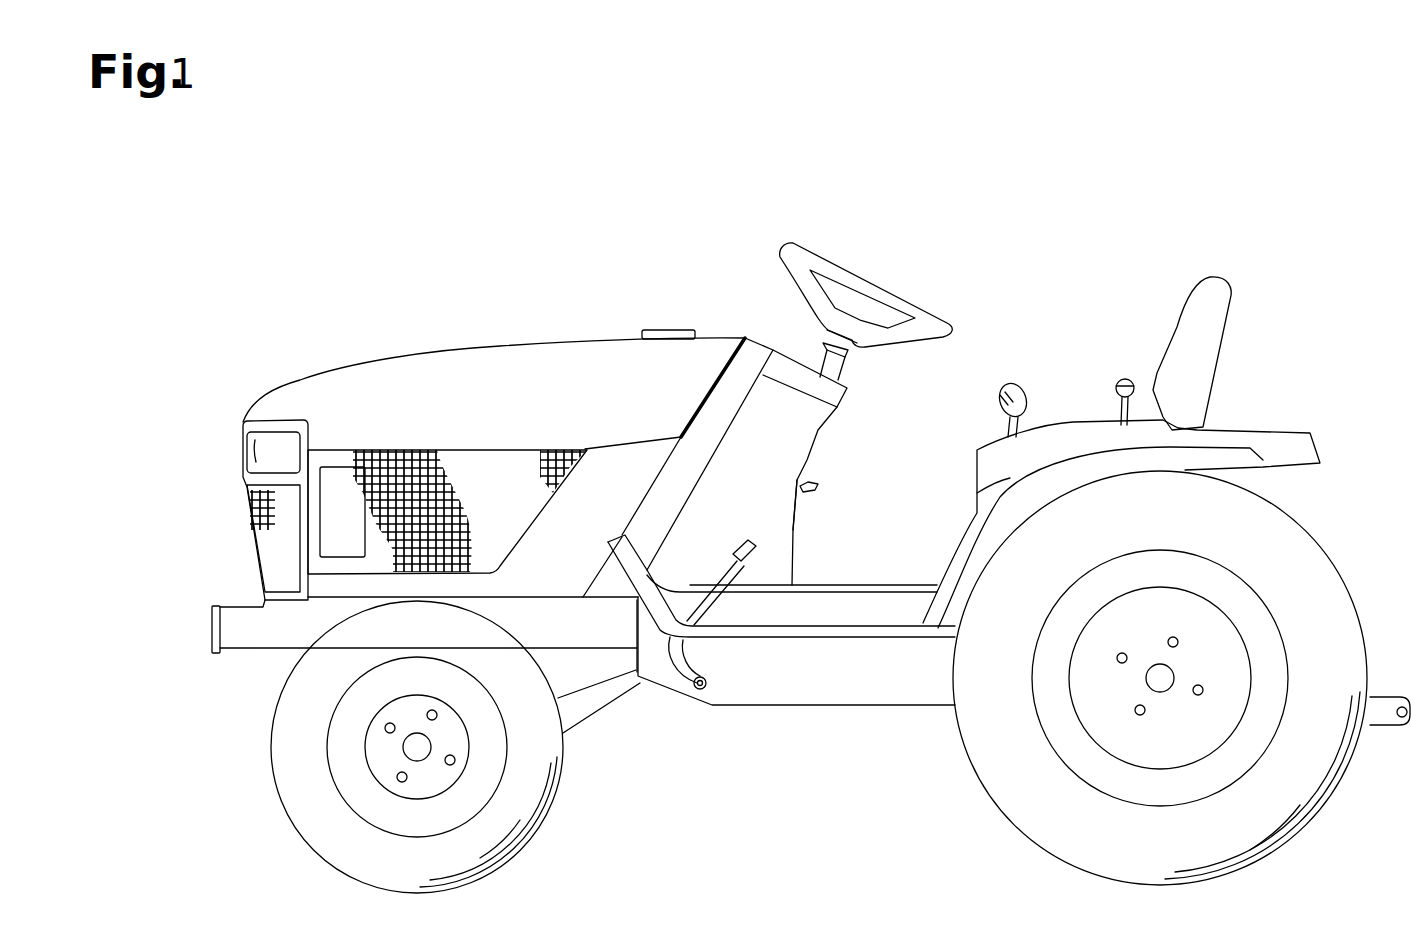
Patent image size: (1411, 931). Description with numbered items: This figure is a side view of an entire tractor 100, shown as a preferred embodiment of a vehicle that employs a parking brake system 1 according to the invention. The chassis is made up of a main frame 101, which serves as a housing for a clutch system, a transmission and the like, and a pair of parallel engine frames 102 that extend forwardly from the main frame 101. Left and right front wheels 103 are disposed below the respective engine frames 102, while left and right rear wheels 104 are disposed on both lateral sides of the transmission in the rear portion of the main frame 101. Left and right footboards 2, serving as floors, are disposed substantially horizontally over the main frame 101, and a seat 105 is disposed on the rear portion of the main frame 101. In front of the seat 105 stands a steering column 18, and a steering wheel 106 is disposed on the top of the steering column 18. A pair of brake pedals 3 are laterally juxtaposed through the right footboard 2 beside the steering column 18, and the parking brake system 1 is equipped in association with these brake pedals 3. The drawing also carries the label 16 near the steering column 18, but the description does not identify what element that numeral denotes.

The tractor 100 is at (726, 206).
The main frame 101 is at (817, 707).
The engine frames 102 is at (272, 645).
The front wheels 103 is at (562, 780).
The rear wheels 104 is at (990, 800).
The seat 105 is at (1177, 328).
The steering wheel 106 is at (896, 286).
The parking brake system 1 is at (833, 503).
The footboards 2 is at (720, 640).
The brake pedals 3 is at (760, 517).
The cowl 16 is at (820, 478).
The steering column 18 is at (810, 458).